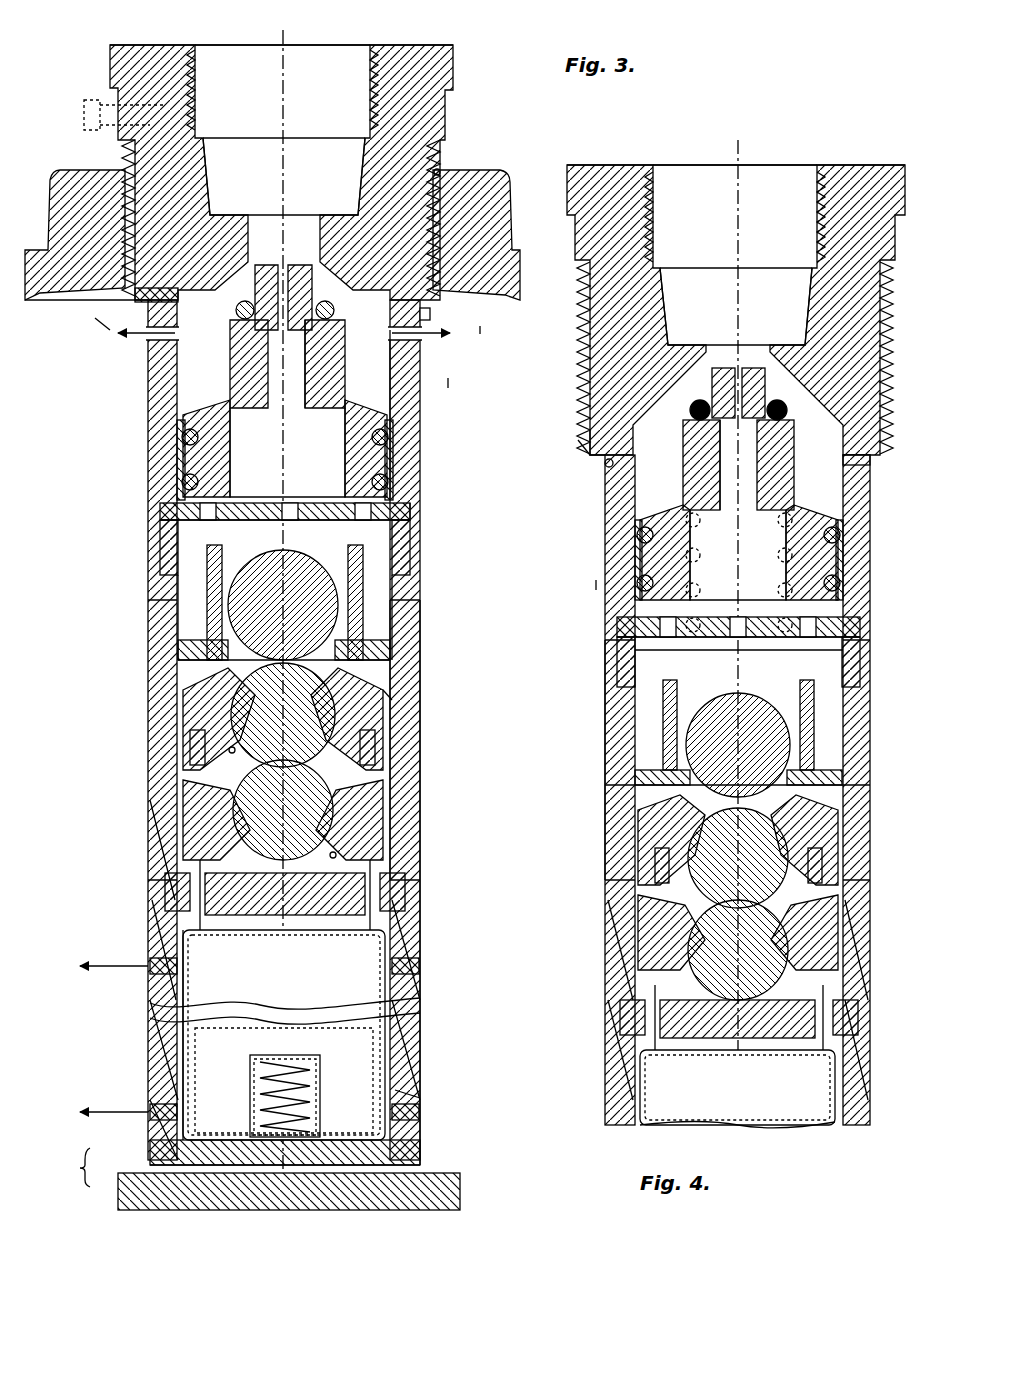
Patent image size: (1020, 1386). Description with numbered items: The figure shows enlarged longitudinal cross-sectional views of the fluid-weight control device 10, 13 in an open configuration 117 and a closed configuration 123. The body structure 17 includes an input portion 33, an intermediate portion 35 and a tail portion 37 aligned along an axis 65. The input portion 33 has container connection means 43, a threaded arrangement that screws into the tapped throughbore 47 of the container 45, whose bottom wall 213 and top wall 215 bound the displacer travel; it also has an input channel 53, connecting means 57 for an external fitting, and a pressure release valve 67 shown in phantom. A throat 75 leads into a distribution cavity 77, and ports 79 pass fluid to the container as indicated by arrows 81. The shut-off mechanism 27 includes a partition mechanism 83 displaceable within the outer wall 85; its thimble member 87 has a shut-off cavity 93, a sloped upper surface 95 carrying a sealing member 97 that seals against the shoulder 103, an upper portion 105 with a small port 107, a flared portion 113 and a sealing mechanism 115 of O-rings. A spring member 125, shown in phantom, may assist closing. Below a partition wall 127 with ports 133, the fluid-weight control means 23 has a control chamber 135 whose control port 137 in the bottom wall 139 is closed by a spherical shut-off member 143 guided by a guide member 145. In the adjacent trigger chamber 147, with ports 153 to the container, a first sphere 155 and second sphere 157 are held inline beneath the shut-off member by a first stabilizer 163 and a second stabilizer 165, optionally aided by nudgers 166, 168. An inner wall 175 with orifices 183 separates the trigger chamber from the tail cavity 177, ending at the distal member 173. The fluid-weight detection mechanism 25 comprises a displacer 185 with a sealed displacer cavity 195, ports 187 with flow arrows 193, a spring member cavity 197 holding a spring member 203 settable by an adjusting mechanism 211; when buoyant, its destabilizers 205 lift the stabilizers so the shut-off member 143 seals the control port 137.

In FIG. 3, the fluid-weight control device 10 is at (520, 115).
In FIG. 4, the fluid-weight control device 10 is at (648, 122).
In FIG. 3, the fluid-weight control device 13 is at (458, 62).
In FIG. 4, the fluid-weight control device 13 is at (875, 165).
In FIG. 3, the body structure 17 is at (421, 1052).
In FIG. 4, the body structure 17 is at (872, 874).
In FIG. 3, the fluid-weight control means 23 is at (432, 626).
In FIG. 4, the fluid-weight control means 23 is at (598, 775).
In FIG. 3, the fluid-weight detection mechanism 25 is at (432, 1083).
In FIG. 3, the shut-off mechanism 27 is at (100, 398).
In FIG. 4, the shut-off mechanism 27 is at (590, 533).
In FIG. 3, the input portion 33 is at (448, 100).
In FIG. 4, the input portion 33 is at (585, 400).
In FIG. 3, the intermediate portion 35 is at (420, 727).
In FIG. 4, the intermediate portion 35 is at (606, 862).
In FIG. 3, the tail portion 37 is at (148, 1057).
In FIG. 3, the container connection means 43 is at (135, 295).
In FIG. 4, the container connection means 43 is at (588, 332).
In FIG. 3, the container 45 is at (58, 175).
In FIG. 3, the tapped throughbore 47 is at (442, 172).
In FIG. 3, the input channel 53 is at (236, 112).
In FIG. 3, the connecting means 57 is at (200, 58).
In FIG. 4, the connecting means 57 is at (655, 174).
In FIG. 3, the axis 65 is at (290, 60).
In FIG. 4, the axis 65 is at (745, 168).
In FIG. 3, the pressure release valve 67 is at (94, 98).
In FIG. 3, the throat 75 is at (245, 218).
In FIG. 4, the throat 75 is at (705, 346).
In FIG. 3, the distribution cavity 77 is at (354, 370).
In FIG. 4, the distribution cavity 77 is at (644, 452).
In FIG. 3, the ports 79 is at (428, 316).
In FIG. 4, the ports 79 is at (606, 466).
In FIG. 3, the arrows 81 is at (143, 342).
In FIG. 3, the partition mechanism 83 is at (450, 381).
In FIG. 4, the partition mechanism 83 is at (594, 586).
In FIG. 3, the outer wall 85 is at (422, 422).
In FIG. 4, the outer wall 85 is at (870, 532).
In FIG. 3, the thimble member 87 is at (230, 347).
In FIG. 4, the thimble member 87 is at (683, 472).
In FIG. 3, the shut-off cavity 93 is at (272, 445).
In FIG. 4, the shut-off cavity 93 is at (727, 550).
In FIG. 3, the upper surface 95 is at (334, 313).
In FIG. 3, the sealing member 97 is at (236, 310).
In FIG. 3, the shoulder 103 is at (250, 262).
In FIG. 4, the upper portion 105 is at (735, 338).
In FIG. 4, the port 107 is at (750, 360).
In FIG. 3, the flared portion 113 is at (385, 478).
In FIG. 3, the sealing mechanism 115 is at (178, 484).
In FIG. 3, the open configuration 117 is at (486, 330).
In FIG. 4, the closed configuration 123 is at (575, 450).
In FIG. 4, the spring member 125 is at (710, 606).
In FIG. 3, the partition wall 127 is at (420, 516).
In FIG. 3, the ports 133 is at (285, 503).
In FIG. 3, the control chamber 135 is at (418, 542).
In FIG. 3, the control port 137 is at (175, 658).
In FIG. 3, the bottom wall 139 is at (410, 642).
In FIG. 3, the shut-off member 143 is at (280, 555).
In FIG. 4, the shut-off member 143 is at (738, 695).
In FIG. 3, the guide member 145 is at (205, 597).
In FIG. 3, the trigger chamber 147 is at (386, 692).
In FIG. 3, the ports 153 is at (183, 700).
In FIG. 4, the ports 153 is at (612, 792).
In FIG. 3, the first sphere 155 is at (366, 745).
In FIG. 3, the second sphere 157 is at (383, 797).
In FIG. 3, the first stabilizer 163 is at (190, 745).
In FIG. 3, the second stabilizer 165 is at (176, 835).
In FIG. 3, the nudger 166 is at (338, 857).
In FIG. 3, the nudger 168 is at (183, 790).
In FIG. 3, the distal member 173 is at (332, 1170).
In FIG. 3, the inner wall 175 is at (405, 880).
In FIG. 3, the tail cavity 177 is at (395, 922).
In FIG. 3, the orifices 183 is at (207, 926).
In FIG. 3, the displacer 185 is at (150, 992).
In FIG. 3, the ports 187 is at (417, 967).
In FIG. 3, the arrows 193 is at (112, 966).
In FIG. 3, the displacer cavity 195 is at (372, 1032).
In FIG. 3, the spring member cavity 197 is at (255, 1102).
In FIG. 3, the spring member 203 is at (306, 1097).
In FIG. 3, the destabilizers 205 is at (370, 930).
In FIG. 3, the adjusting mechanism 211 is at (280, 1150).
In FIG. 3, the bottom wall 213 is at (135, 1208).
In FIG. 3, the top wall 215 is at (69, 339).